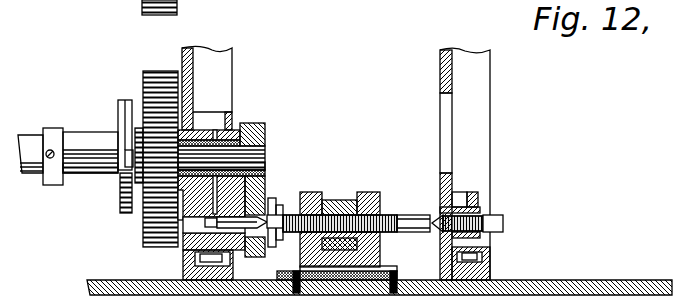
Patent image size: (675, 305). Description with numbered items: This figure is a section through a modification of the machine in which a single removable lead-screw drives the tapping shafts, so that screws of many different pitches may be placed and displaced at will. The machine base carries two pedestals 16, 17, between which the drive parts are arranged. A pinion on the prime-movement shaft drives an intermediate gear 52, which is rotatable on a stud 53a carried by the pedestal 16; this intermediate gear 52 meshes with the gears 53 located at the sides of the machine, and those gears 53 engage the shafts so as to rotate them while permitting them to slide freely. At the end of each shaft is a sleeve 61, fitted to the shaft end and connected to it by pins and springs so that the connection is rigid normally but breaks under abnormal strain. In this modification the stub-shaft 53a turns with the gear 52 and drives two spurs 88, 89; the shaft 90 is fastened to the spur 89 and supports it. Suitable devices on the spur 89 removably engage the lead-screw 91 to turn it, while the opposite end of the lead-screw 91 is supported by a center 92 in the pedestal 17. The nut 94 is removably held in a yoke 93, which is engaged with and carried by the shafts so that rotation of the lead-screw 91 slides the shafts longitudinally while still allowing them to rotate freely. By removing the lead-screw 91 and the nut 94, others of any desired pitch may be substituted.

The pedestal 16 is at (209, 96).
The pedestal 17 is at (465, 164).
The intermediate gear 52 is at (143, 217).
The gear 53 is at (131, 8).
The stud (stub-shaft) 53a is at (257, 157).
The sleeve 61 is at (78, 136).
The spur 88 is at (265, 127).
The spur 89 is at (265, 197).
The shaft 90 is at (195, 223).
The lead-screw 91 is at (390, 213).
The center 92 is at (481, 218).
The yoke 93 is at (308, 193).
The nut 94 is at (347, 200).